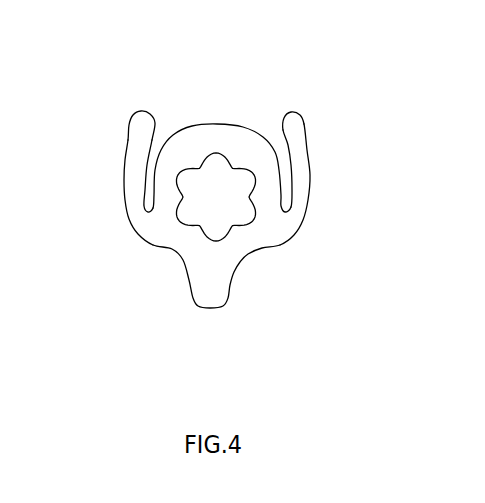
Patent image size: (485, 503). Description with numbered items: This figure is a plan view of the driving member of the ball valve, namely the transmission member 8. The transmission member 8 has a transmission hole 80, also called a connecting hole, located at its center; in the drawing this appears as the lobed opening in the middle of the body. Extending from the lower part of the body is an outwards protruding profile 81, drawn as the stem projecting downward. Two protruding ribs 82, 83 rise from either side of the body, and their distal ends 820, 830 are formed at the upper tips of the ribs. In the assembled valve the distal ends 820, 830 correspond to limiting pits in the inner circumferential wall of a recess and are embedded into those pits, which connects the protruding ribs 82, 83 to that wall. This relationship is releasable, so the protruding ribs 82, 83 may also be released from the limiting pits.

The transmission member 8 is at (212, 191).
The transmission hole 80 is at (217, 202).
The outwards protruding profile 81 is at (210, 295).
The protruding rib 82 is at (128, 190).
The distal end 820 is at (133, 122).
The protruding rib 83 is at (302, 193).
The distal end 830 is at (293, 122).